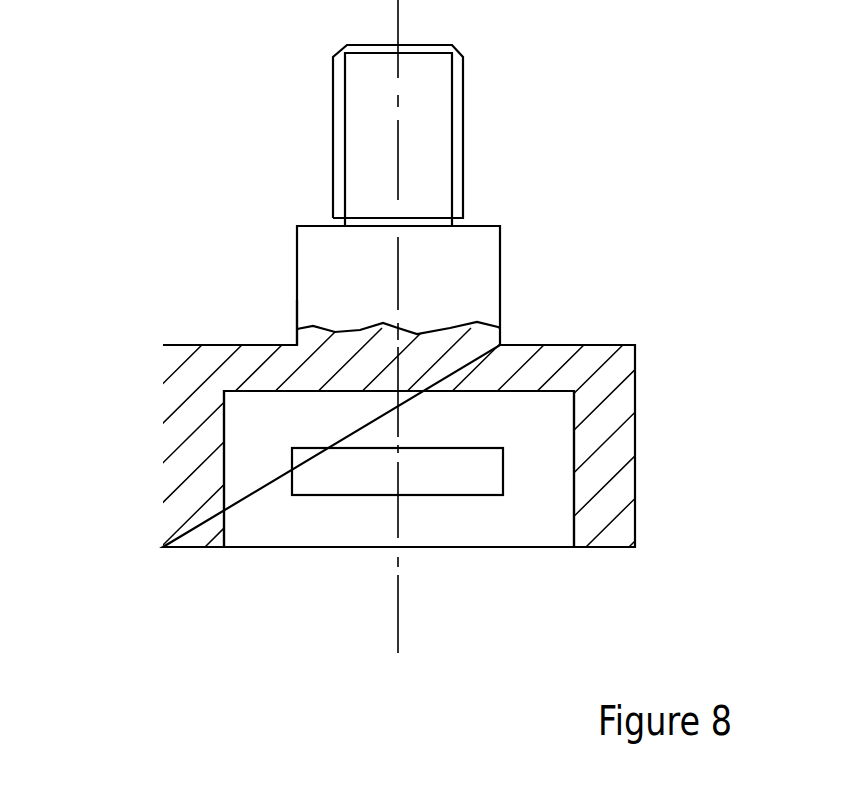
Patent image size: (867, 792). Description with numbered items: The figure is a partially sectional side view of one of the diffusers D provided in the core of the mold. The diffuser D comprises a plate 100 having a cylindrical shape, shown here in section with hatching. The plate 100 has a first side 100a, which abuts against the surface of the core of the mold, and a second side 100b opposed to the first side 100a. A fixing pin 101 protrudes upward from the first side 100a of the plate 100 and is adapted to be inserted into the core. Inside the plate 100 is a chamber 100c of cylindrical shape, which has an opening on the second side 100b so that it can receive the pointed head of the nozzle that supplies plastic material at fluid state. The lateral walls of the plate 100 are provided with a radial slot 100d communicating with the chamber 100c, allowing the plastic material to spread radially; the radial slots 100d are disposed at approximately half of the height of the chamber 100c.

The plate 100 is at (187, 458).
The fixing pin 101 is at (428, 142).
The first side 100a is at (558, 347).
The second side 100b is at (190, 547).
The chamber 100c is at (268, 513).
The radial slot 100d is at (465, 473).
The diffuser D is at (218, 333).